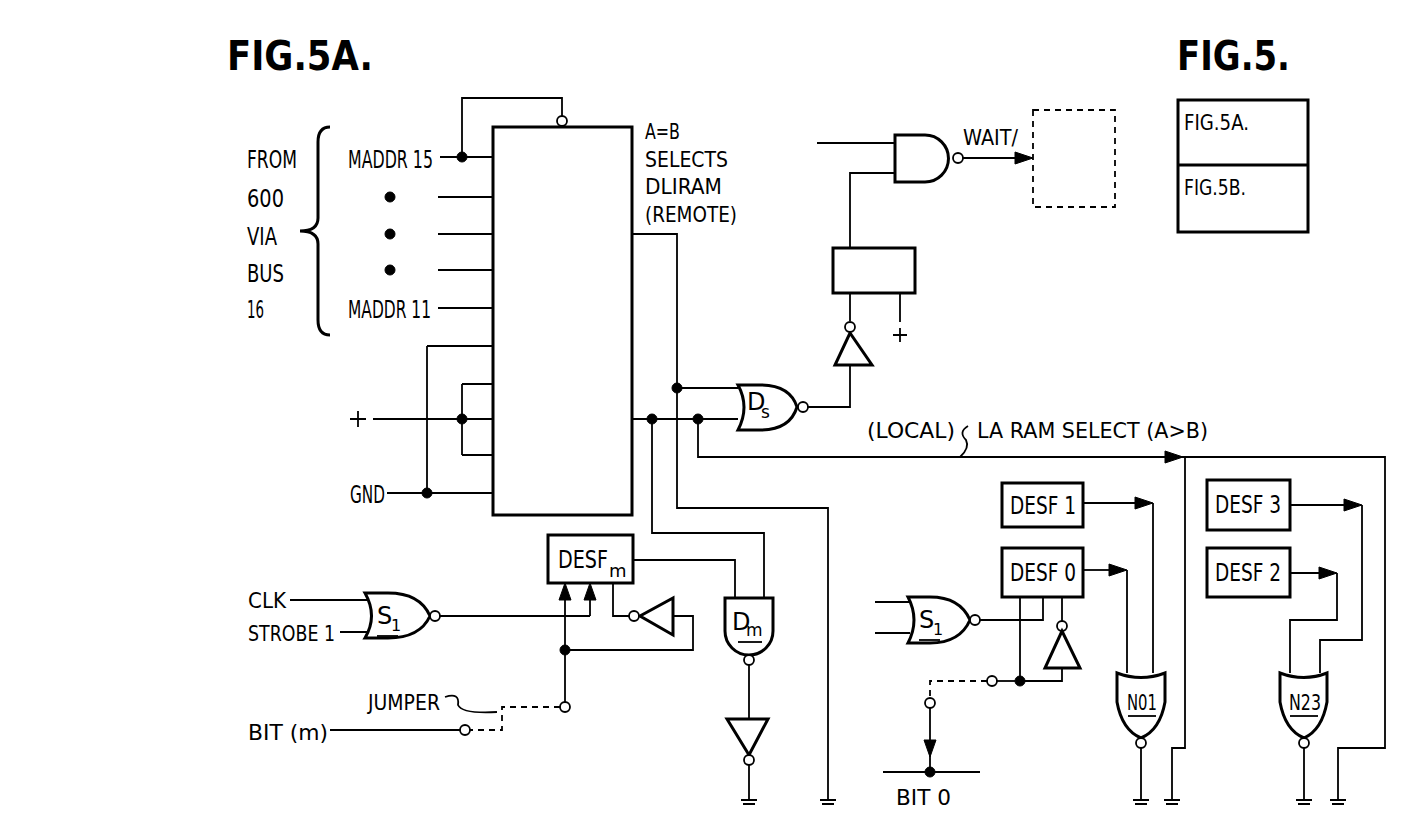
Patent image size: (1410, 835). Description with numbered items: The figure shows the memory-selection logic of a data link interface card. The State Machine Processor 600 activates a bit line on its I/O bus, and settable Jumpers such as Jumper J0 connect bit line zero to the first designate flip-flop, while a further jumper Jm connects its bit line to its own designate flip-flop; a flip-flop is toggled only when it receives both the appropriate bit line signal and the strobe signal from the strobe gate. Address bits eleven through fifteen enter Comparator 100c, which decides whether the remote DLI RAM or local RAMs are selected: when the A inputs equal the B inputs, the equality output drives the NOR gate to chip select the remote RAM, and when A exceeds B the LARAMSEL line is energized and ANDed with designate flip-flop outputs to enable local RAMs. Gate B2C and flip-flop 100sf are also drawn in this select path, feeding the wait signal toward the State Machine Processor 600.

The comparator 100c is at (607, 130).
The SLMF flip-flop 100sf is at (915, 273).
The State Machine Processor 600 is at (1070, 208).
The NAND gate B2C is at (912, 148).
The jumper m Jm is at (538, 706).
The Jumper J0 is at (936, 692).